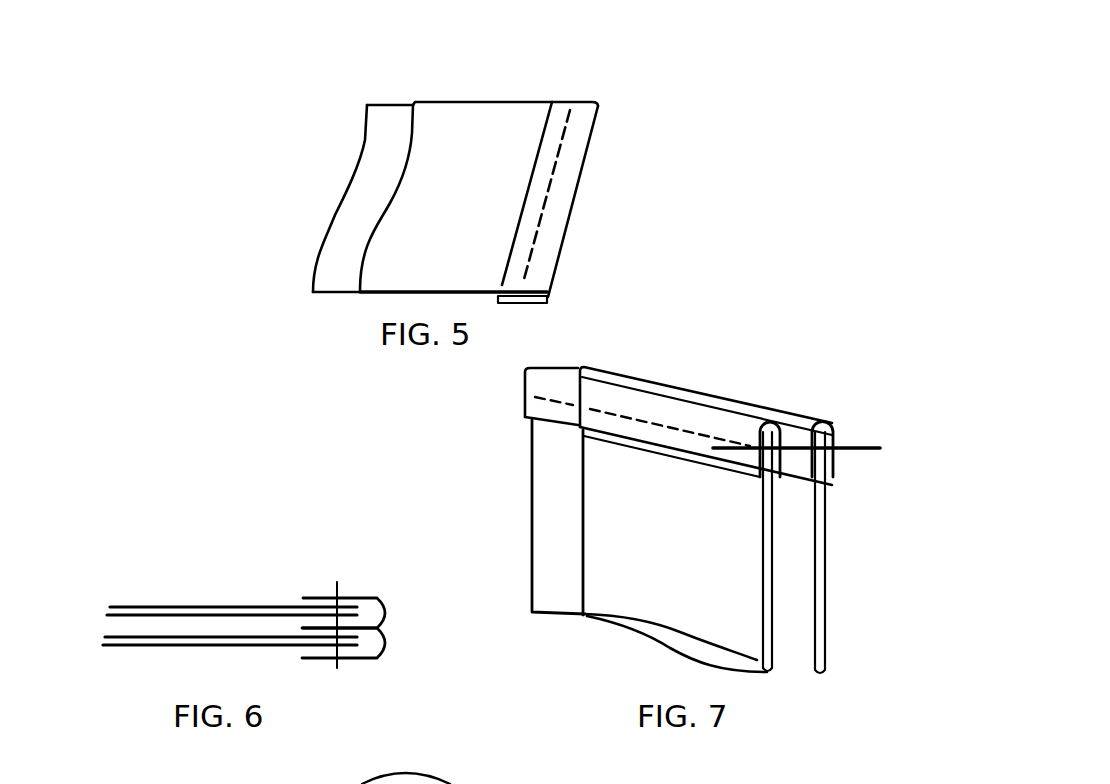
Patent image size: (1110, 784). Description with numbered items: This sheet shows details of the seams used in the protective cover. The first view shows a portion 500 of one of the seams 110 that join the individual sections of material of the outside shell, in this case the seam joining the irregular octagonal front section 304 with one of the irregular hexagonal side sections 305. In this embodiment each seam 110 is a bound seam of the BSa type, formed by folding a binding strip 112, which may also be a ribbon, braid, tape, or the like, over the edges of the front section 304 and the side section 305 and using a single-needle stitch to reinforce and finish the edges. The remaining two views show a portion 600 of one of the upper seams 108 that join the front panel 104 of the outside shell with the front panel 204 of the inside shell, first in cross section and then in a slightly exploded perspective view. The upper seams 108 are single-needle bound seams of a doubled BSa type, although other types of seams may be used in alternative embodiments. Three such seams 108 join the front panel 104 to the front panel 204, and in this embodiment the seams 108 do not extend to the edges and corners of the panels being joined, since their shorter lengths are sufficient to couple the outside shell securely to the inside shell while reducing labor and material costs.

In FIG. 5, the portion of seam 500 is at (439, 172).
In FIG. 5, the side section 305 is at (483, 118).
In FIG. 5, the front section 304 is at (340, 253).
In FIG. 5, the seam 110 is at (557, 162).
In FIG. 5, the binding strip 112 is at (543, 248).
In FIG. 6, the binding strip 112 is at (368, 643).
In FIG. 7, the binding strip 112 is at (760, 430).
In FIG. 6, the portion of upper seam 600 is at (262, 624).
In FIG. 7, the portion of upper seam 600 is at (655, 483).
In FIG. 6, the front panel 104 is at (128, 605).
In FIG. 7, the front panel 104 is at (543, 483).
In FIG. 6, the front panel 204 is at (135, 648).
In FIG. 7, the front panel 204 is at (802, 582).
In FIG. 6, the upper seam 108 is at (338, 597).
In FIG. 7, the upper seam 108 is at (792, 437).